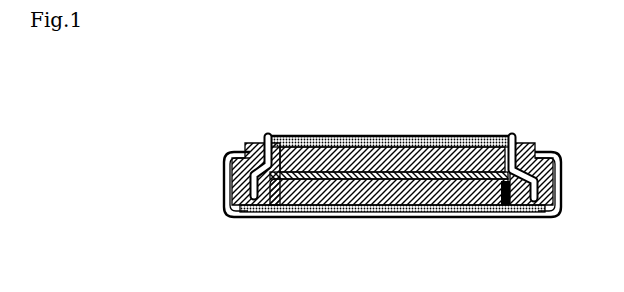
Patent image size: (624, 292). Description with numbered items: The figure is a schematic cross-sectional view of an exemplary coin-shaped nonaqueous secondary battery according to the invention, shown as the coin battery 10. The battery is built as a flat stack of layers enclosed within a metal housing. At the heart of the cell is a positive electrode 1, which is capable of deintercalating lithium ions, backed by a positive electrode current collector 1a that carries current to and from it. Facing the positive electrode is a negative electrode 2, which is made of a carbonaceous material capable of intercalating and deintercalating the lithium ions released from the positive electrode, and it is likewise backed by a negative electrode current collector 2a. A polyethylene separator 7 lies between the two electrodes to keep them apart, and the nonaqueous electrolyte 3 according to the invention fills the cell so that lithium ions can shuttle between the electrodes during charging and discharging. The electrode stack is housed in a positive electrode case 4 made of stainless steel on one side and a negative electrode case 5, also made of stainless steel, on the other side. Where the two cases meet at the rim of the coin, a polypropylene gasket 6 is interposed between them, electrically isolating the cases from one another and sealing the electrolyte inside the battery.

The coin battery 10 is at (445, 120).
The positive electrode 1 is at (355, 212).
The positive electrode current collector 1a is at (305, 214).
The negative electrode 2 is at (420, 136).
The negative electrode current collector 2a is at (347, 136).
The nonaqueous electrolyte 3 is at (268, 137).
The positive electrode case 4 is at (430, 218).
The negative electrode case 5 is at (492, 137).
The gasket 6 is at (240, 215).
The separator 7 is at (465, 218).